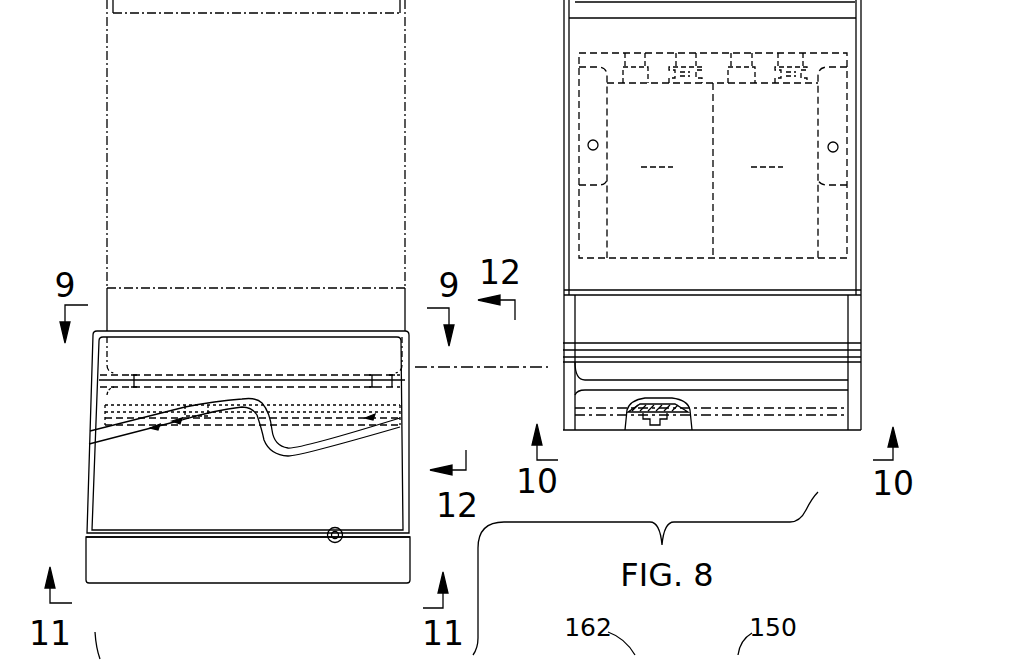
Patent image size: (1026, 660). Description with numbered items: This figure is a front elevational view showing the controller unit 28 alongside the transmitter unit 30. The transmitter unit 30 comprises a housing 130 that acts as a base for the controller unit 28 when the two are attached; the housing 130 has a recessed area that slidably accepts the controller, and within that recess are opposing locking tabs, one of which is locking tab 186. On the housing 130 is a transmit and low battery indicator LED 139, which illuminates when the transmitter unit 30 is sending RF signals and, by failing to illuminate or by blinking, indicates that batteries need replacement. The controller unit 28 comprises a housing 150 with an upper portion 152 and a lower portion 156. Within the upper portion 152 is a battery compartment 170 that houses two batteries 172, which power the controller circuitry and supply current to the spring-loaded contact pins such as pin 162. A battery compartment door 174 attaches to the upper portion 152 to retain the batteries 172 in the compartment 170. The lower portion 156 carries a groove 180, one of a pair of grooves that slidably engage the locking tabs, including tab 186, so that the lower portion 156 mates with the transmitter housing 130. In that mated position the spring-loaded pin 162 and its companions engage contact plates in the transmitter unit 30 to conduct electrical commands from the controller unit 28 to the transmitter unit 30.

The controller unit 28 is at (75, 43).
The transmitter unit 30 is at (75, 424).
The housing 130 is at (88, 497).
The transmit and low battery indicator LED 139 is at (333, 543).
The locking tab 186 is at (340, 378).
The upper portion 152 is at (862, 67).
The battery compartment door 174 is at (862, 150).
The battery compartment 170 is at (834, 222).
The batteries 172 is at (712, 153).
The housing 150 is at (862, 276).
The lower portion 156 is at (862, 329).
The electrical spring-loaded pin 162 is at (655, 422).
The groove 180 is at (780, 388).